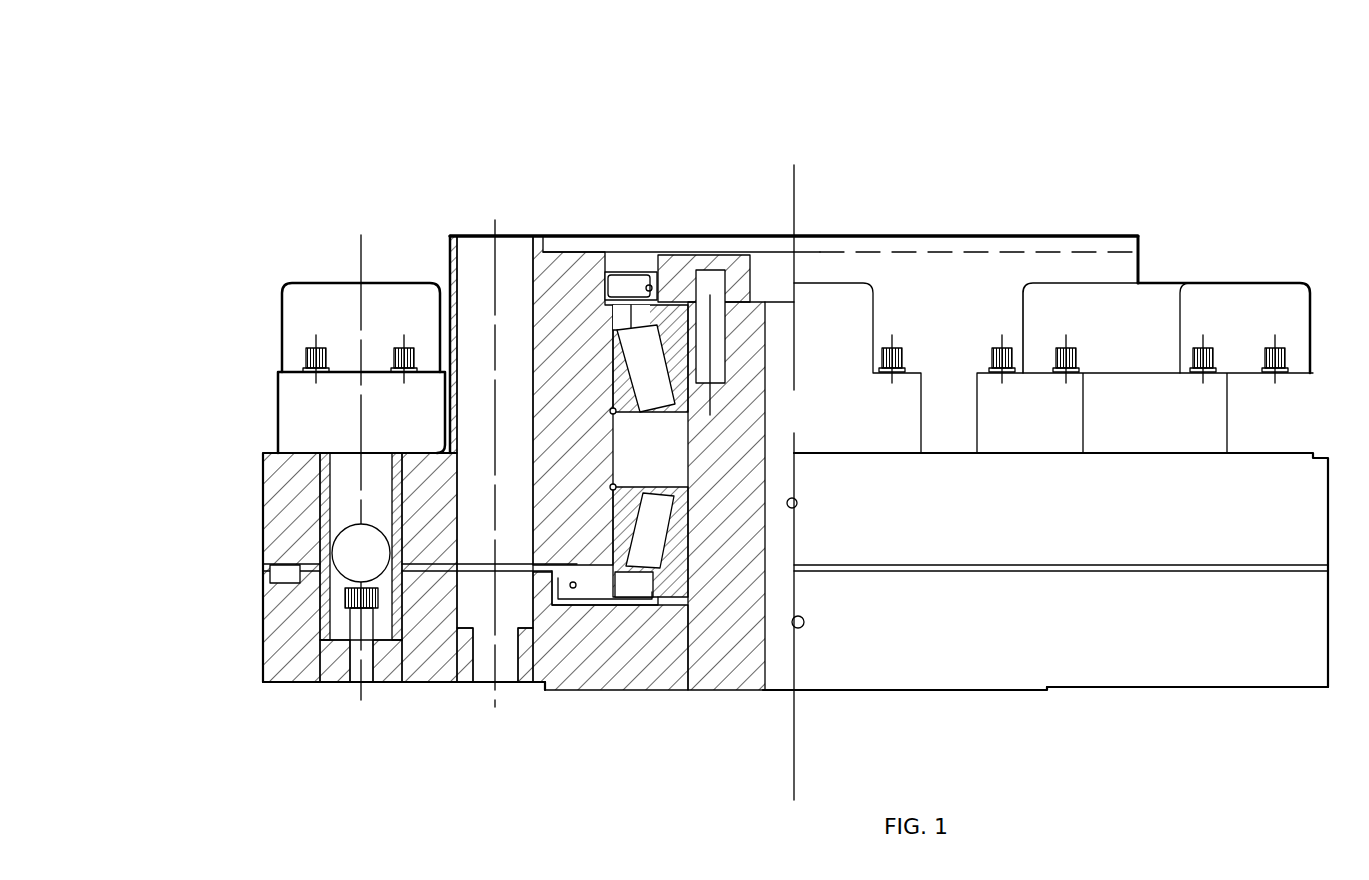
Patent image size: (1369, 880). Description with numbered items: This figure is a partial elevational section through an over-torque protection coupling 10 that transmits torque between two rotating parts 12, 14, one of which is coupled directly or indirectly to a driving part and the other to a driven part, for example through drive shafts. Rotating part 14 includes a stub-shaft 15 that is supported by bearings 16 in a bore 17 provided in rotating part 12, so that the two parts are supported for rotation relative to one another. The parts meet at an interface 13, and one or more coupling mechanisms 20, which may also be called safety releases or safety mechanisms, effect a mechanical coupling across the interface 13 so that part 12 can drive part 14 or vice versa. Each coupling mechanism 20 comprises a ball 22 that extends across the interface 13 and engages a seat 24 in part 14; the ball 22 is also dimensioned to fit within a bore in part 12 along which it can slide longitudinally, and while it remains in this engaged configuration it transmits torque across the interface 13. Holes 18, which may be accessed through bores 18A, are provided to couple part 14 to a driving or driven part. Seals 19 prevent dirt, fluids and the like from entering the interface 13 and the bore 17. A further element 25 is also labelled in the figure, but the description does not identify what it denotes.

The over-torque protection coupling 10 is at (1148, 80).
The rotating part 12 is at (330, 538).
The interface 13 is at (433, 565).
The rotating part 14 is at (263, 678).
The stub-shaft 15 is at (765, 370).
The bearings 16 is at (648, 355).
The bore 17 is at (627, 447).
The holes 18 is at (480, 678).
The bores 18A is at (477, 253).
The seals 19 is at (625, 272).
The coupling mechanism 20 is at (280, 262).
The ball 22 is at (320, 530).
The seat 24 is at (330, 626).
The bolt 25 is at (325, 590).